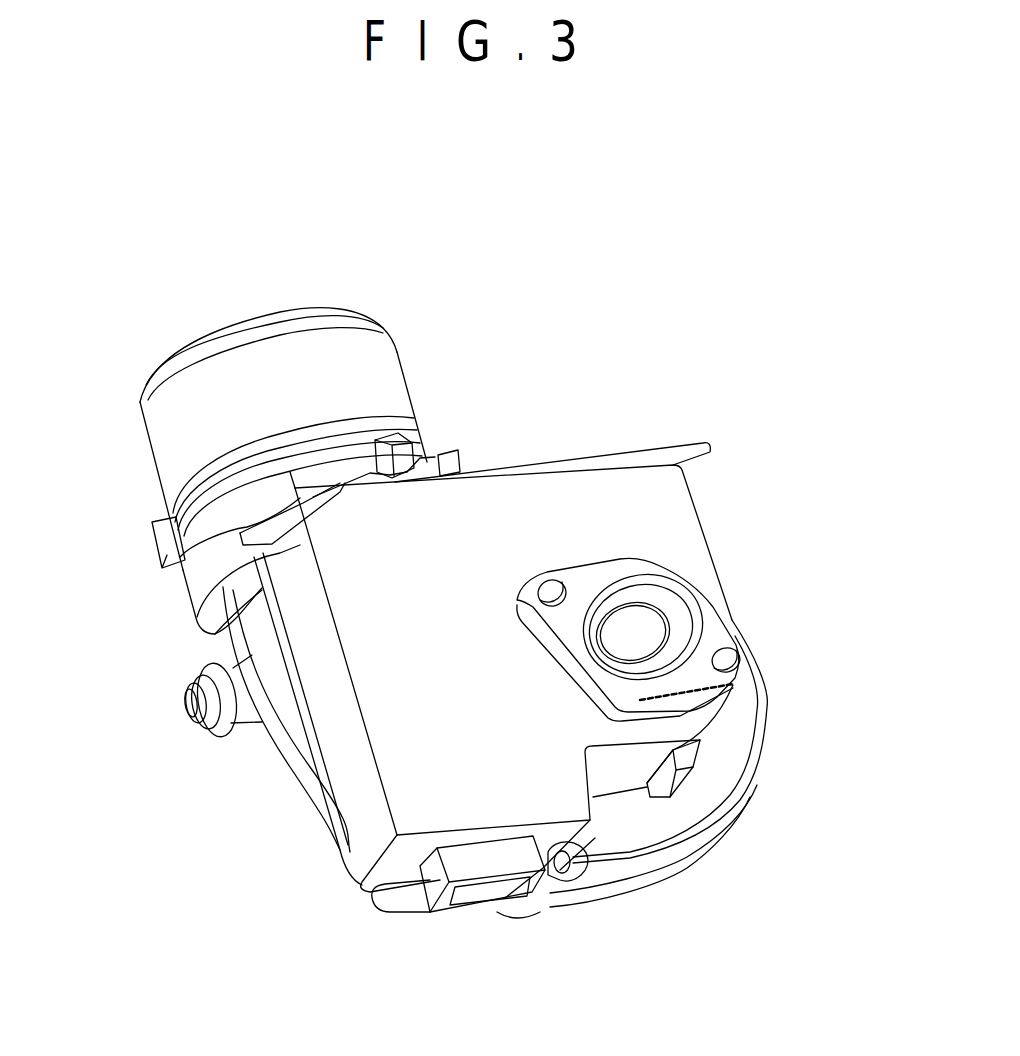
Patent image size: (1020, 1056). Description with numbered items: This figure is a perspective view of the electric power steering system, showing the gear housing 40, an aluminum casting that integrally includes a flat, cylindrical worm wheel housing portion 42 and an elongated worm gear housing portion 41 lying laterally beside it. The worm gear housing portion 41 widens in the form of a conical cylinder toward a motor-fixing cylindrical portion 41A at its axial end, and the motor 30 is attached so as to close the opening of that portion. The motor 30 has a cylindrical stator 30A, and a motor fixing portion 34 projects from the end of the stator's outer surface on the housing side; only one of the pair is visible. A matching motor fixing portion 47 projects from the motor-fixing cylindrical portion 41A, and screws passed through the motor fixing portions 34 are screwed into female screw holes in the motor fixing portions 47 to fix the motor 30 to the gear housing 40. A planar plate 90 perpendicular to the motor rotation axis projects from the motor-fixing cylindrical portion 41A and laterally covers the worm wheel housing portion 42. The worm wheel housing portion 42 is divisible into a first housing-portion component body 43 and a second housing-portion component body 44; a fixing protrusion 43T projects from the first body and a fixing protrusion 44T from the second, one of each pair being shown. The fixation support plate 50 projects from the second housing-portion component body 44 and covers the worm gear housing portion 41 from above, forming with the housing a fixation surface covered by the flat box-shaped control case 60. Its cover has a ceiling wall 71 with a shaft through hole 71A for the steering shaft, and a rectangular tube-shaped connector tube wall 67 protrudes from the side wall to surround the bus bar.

The motor 30 is at (318, 295).
The cylindrical stator 30A is at (177, 435).
The motor fixing portion 34 is at (357, 457).
The gear housing 40 is at (785, 705).
The worm gear housing portion 41 is at (380, 913).
The motor-fixing cylindrical portion 41A is at (195, 585).
The worm wheel housing portion 42 is at (728, 767).
The first housing-portion component body 43 is at (672, 878).
The fixing protrusion 43T is at (517, 912).
The second housing-portion component body 44 is at (720, 787).
The fixing protrusion 44T is at (570, 870).
The motor fixing portion 47 is at (372, 490).
The fixation support plate 50 is at (330, 805).
The control case 60 is at (723, 587).
The connector tube wall 67 is at (458, 907).
The ceiling wall 71 is at (683, 517).
The shaft through hole 71A is at (653, 617).
The plate 90 is at (610, 460).